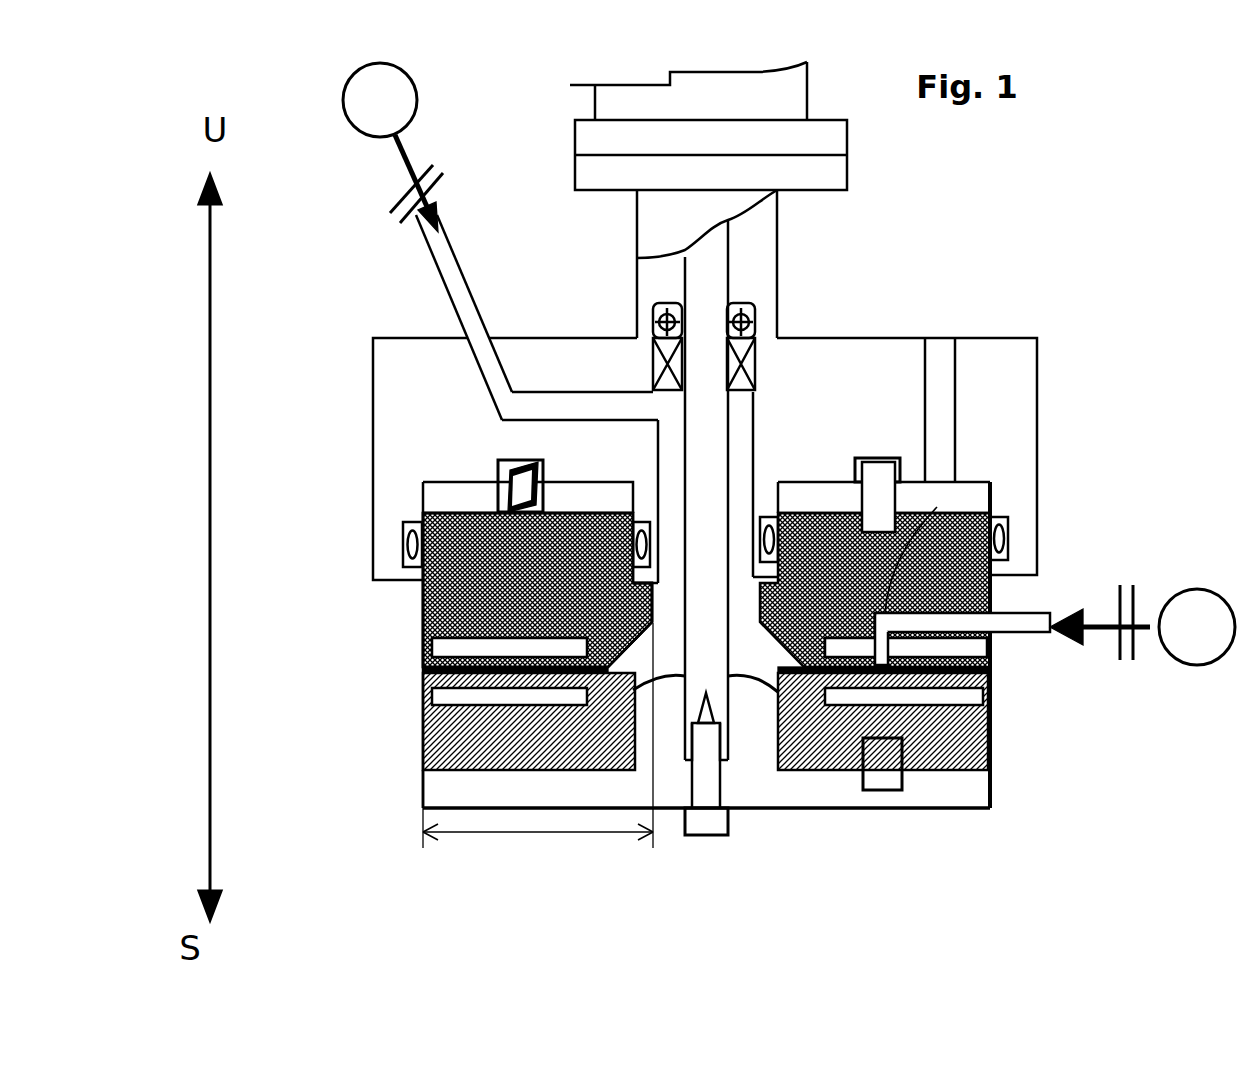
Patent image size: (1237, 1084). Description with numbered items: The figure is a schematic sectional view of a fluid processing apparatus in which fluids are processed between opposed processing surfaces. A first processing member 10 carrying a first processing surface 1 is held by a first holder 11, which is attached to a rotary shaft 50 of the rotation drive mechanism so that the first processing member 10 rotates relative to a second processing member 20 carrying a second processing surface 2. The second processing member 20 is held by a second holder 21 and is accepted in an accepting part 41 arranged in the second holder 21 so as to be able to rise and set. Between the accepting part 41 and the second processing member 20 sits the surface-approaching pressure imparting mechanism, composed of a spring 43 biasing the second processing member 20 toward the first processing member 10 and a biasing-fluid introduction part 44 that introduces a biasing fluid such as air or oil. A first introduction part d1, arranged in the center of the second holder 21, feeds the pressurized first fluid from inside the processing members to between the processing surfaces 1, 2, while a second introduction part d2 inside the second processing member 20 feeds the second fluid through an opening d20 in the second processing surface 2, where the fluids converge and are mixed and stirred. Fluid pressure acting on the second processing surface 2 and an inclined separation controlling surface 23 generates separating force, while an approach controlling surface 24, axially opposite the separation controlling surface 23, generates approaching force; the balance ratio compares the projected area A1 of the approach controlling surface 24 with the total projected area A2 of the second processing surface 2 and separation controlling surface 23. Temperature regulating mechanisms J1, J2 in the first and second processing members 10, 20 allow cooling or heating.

The first processing surface 1 is at (500, 700).
The second processing surface 2 is at (547, 648).
The first processing member 10 is at (990, 752).
The first holder 11 is at (938, 785).
The second processing member 20 is at (525, 568).
The second holder 21 is at (1007, 410).
The separation controlling surface 23 is at (770, 635).
The approach controlling surface 24 is at (765, 590).
The accepting part 41 is at (605, 493).
The spring 43 is at (498, 493).
The biasing-fluid introduction part 44 is at (938, 383).
The rotary shaft 50 is at (703, 590).
The temperature regulating mechanism J1 is at (563, 694).
The temperature regulating mechanism J2 is at (560, 640).
The projected area of the approach controlling surface A1 is at (652, 584).
The total projected area of the second processing surface and separation controlling A2 is at (528, 834).
The first introduction part d1 is at (452, 303).
The second introduction part d2 is at (1008, 625).
The opening d20 is at (937, 507).